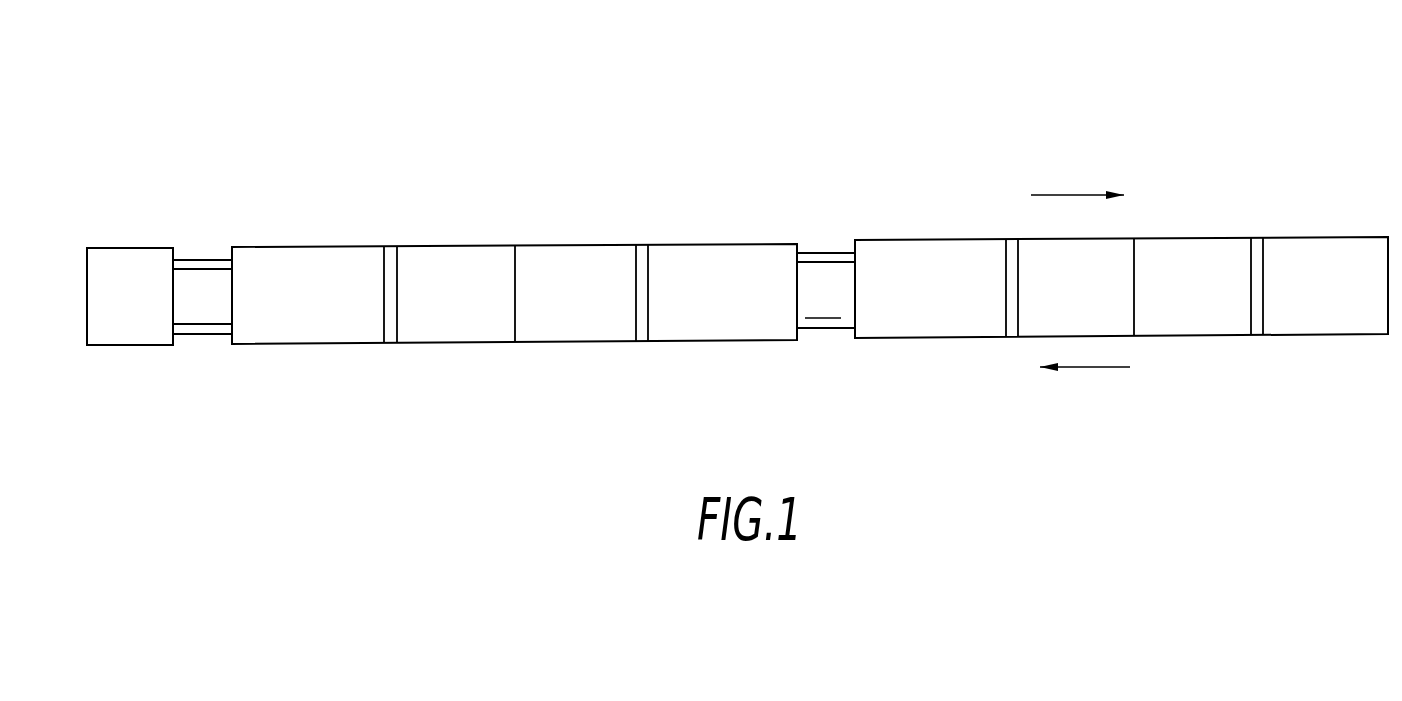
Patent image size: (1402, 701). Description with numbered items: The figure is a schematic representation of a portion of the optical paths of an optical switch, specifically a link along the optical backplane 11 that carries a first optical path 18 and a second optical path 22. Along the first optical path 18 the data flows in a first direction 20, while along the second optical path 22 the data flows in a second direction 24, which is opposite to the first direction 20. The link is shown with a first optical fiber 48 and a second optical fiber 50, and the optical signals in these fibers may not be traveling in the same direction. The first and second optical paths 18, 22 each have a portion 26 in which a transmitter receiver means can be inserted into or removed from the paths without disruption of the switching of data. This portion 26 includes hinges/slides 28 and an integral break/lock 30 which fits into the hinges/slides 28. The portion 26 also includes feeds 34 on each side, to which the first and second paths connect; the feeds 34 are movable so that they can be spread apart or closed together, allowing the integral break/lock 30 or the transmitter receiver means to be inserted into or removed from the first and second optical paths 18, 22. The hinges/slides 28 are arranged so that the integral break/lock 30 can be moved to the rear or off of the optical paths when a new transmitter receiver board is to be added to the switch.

The optical backplane 11 is at (878, 432).
The first optical path 18 is at (829, 343).
The first direction 20 is at (1090, 368).
The second optical path 22 is at (811, 249).
The second direction 24 is at (1068, 194).
The portion 26 is at (548, 366).
The hinge/slide 28 is at (641, 243).
The integral break/lock 30 is at (1224, 398).
The feed 34 is at (305, 348).
The first optical fiber 48 is at (203, 337).
The second optical fiber 50 is at (204, 256).